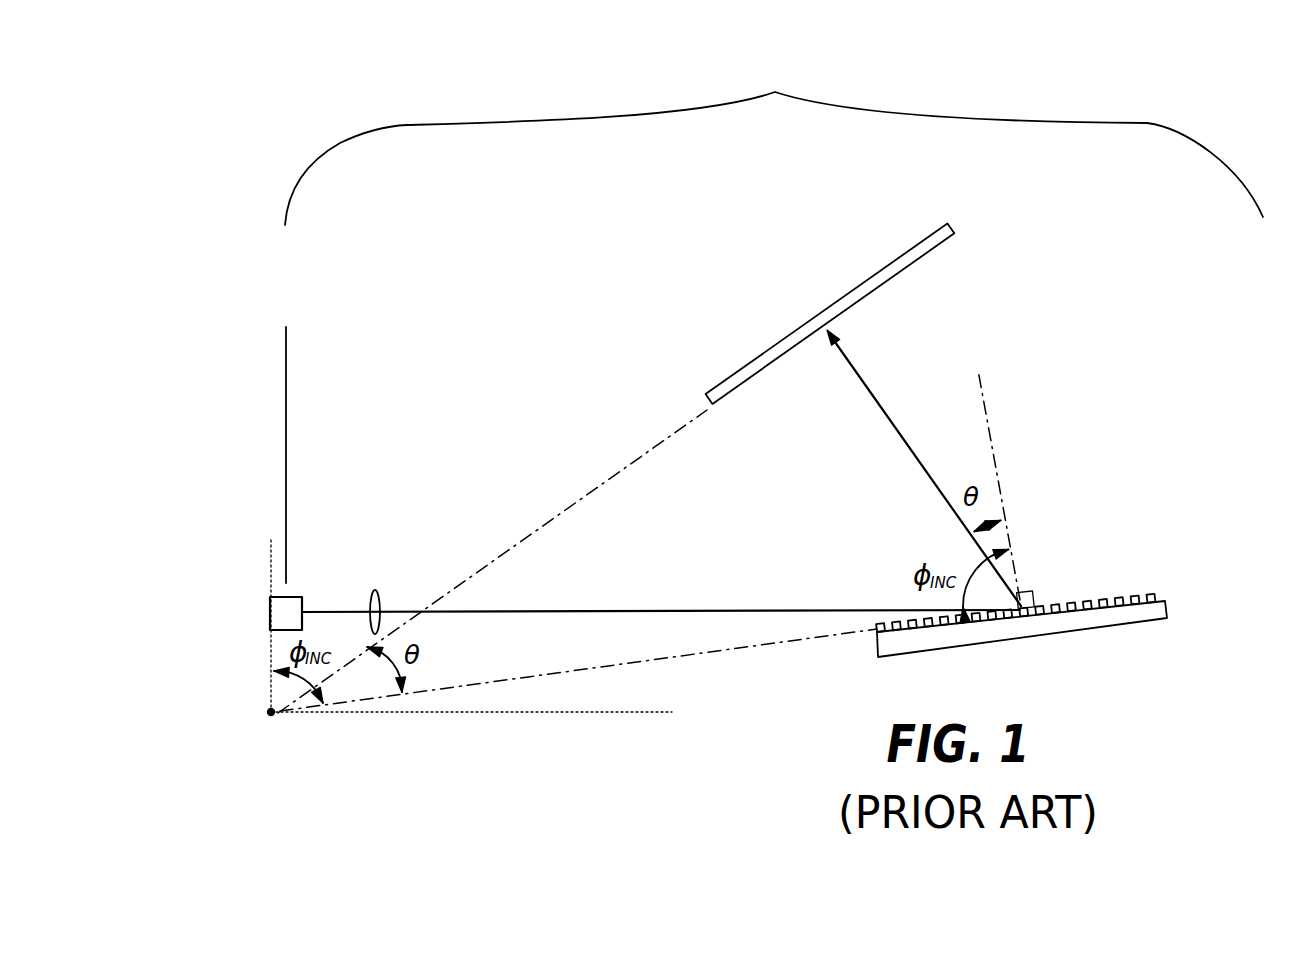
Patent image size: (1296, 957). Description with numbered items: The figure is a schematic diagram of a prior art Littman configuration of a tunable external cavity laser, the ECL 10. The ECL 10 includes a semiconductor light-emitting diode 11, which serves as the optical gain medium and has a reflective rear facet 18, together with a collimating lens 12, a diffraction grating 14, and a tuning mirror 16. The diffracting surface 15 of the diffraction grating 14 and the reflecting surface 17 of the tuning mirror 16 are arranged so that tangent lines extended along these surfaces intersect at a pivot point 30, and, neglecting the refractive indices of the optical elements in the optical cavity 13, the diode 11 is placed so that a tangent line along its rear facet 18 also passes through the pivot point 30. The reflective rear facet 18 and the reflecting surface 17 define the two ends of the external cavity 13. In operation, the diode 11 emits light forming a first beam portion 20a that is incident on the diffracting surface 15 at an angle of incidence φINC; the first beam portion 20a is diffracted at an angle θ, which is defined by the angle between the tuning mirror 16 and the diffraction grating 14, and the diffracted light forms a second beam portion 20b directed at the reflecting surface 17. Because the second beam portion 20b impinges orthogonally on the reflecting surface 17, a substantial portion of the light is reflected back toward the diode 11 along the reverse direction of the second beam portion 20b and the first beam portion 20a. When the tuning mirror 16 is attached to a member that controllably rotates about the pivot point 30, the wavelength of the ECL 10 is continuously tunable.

The ECL 10 is at (1097, 294).
The semiconductor light-emitting diode 11 is at (302, 598).
The collimating lens 12 is at (380, 596).
The external cavity 13 is at (774, 142).
The diffraction grating 14 is at (1166, 612).
The diffracting surface 15 is at (1073, 590).
The tuning mirror 16 is at (944, 226).
The reflecting surface 17 is at (908, 285).
The reflective rear facet 18 is at (268, 613).
The first beam portion 20a is at (664, 611).
The second beam portion 20b is at (904, 442).
The pivot point 30 is at (289, 727).